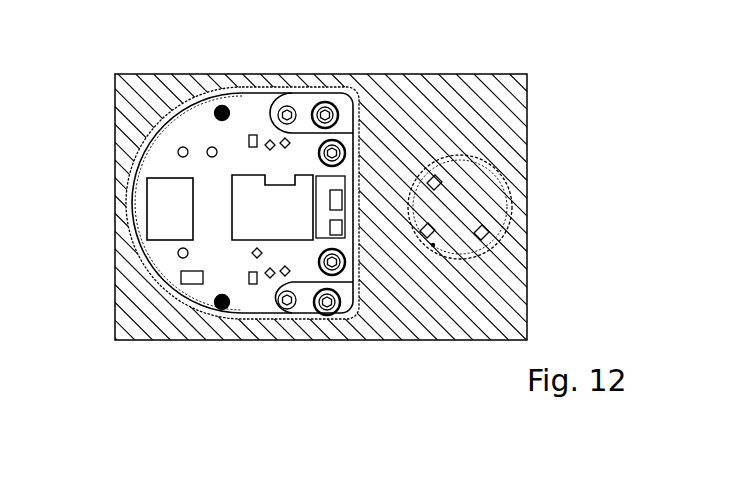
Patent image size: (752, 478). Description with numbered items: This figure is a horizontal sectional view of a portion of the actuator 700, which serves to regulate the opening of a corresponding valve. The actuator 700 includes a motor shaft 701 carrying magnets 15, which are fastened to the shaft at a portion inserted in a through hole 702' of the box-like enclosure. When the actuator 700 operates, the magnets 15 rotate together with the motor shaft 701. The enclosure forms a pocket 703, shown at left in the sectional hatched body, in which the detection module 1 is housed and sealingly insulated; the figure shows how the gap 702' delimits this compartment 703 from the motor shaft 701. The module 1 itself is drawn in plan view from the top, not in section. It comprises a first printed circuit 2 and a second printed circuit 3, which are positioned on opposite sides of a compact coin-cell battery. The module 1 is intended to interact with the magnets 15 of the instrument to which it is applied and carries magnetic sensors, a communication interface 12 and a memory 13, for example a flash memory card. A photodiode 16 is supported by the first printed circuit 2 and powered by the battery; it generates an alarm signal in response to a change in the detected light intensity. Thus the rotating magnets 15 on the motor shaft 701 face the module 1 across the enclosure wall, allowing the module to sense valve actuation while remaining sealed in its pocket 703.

The actuator 700 is at (564, 131).
The pocket 703 is at (165, 122).
The detection module 1 is at (143, 156).
The first printed circuit 2 is at (203, 123).
The second printed circuit 3 is at (345, 125).
The memory 13 is at (162, 217).
The communication interface 12 is at (247, 232).
The photodiode 16 is at (333, 229).
The motor shaft 701 is at (496, 202).
The magnets 15 is at (433, 245).
The through hole 702' is at (421, 172).